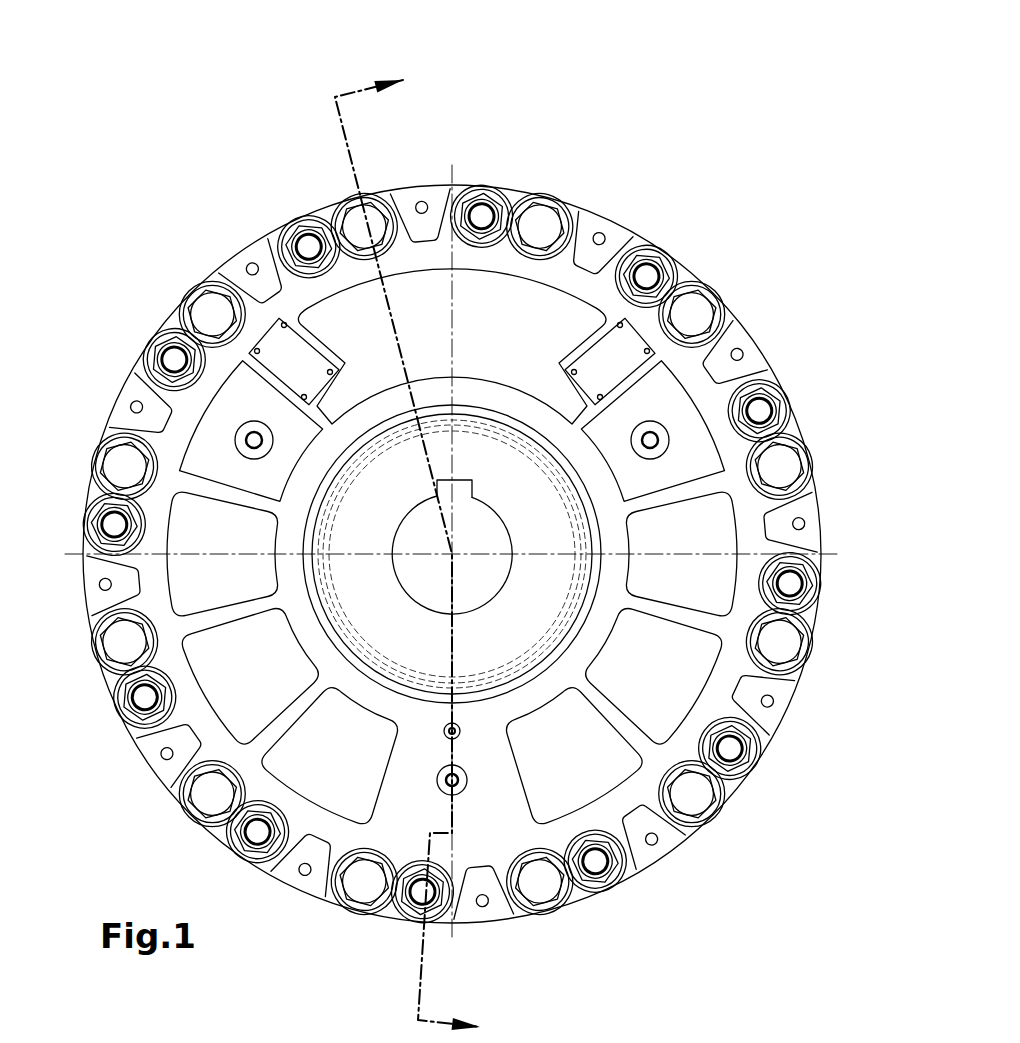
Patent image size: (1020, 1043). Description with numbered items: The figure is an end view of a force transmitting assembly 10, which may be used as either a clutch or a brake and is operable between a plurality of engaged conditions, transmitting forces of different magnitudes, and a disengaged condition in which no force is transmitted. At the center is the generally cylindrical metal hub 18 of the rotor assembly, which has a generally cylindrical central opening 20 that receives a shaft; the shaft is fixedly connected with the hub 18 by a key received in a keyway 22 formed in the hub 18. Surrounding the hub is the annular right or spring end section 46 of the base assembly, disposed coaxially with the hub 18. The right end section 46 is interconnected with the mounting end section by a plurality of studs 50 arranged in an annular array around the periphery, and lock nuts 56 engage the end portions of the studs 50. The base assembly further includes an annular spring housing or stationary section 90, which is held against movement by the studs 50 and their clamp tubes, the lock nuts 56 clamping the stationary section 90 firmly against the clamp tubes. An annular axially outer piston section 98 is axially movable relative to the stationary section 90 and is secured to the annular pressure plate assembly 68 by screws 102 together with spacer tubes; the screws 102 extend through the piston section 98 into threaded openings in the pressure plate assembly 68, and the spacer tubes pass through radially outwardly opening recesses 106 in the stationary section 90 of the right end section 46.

The force transmitting assembly 10 is at (622, 96).
The hub 18 is at (452, 550).
The central opening 20 is at (437, 590).
The keyway 22 is at (470, 489).
The right end section 46 is at (454, 544).
The studs 50 is at (457, 544).
The lock nuts 56 is at (487, 226).
The pressure plate assembly 68 is at (808, 503).
The stationary section 90 is at (722, 397).
The piston section 98 is at (800, 437).
The screws 102 is at (366, 218).
The recesses 106 is at (428, 200).